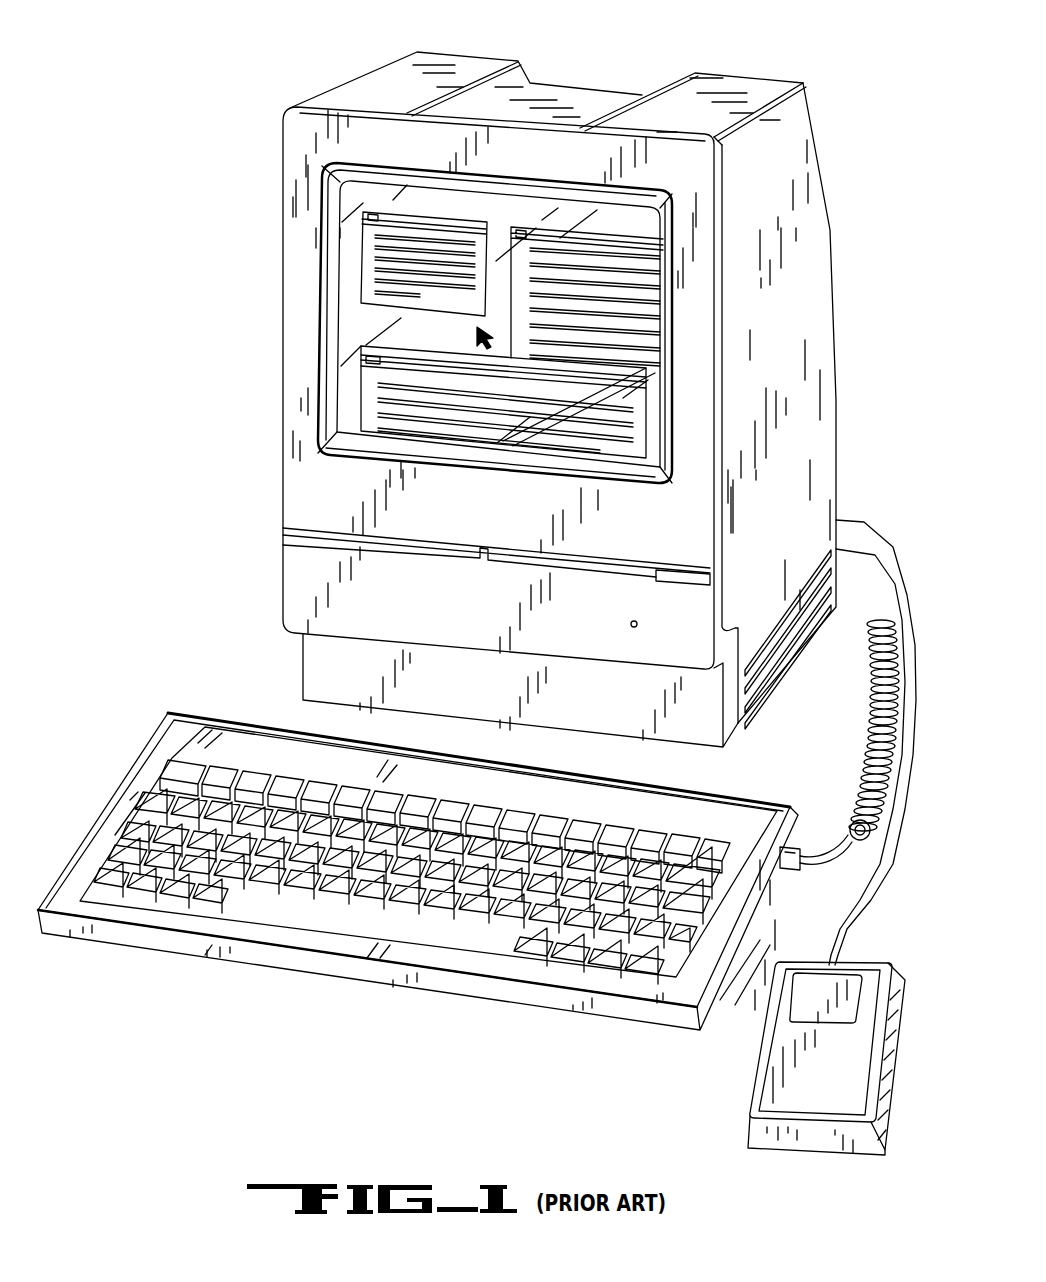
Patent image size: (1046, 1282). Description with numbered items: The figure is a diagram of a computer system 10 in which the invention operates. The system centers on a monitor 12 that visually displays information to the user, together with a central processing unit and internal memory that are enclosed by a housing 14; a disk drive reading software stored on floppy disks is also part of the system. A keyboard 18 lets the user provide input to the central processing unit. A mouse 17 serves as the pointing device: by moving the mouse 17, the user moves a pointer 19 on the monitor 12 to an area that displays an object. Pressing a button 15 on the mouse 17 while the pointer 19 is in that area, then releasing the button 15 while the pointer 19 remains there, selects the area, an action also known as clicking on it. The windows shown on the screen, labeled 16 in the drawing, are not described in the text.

The computer system 10 is at (172, 44).
The monitor 12 is at (576, 366).
The housing 14 is at (325, 497).
The button 15 is at (822, 988).
The window 16 is at (615, 213).
The mouse 17 is at (782, 1050).
The keyboard 18 is at (535, 965).
The pointer 19 is at (473, 335).